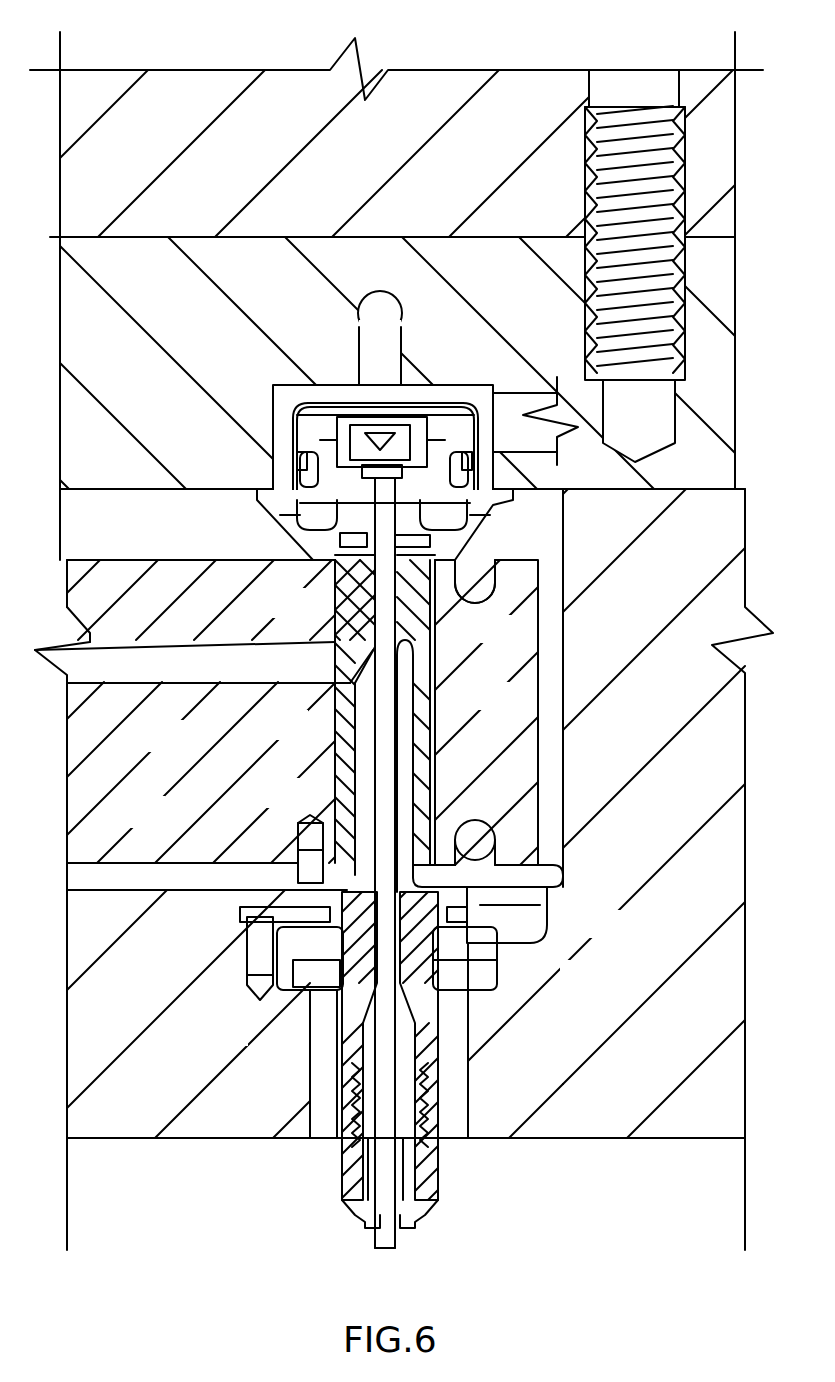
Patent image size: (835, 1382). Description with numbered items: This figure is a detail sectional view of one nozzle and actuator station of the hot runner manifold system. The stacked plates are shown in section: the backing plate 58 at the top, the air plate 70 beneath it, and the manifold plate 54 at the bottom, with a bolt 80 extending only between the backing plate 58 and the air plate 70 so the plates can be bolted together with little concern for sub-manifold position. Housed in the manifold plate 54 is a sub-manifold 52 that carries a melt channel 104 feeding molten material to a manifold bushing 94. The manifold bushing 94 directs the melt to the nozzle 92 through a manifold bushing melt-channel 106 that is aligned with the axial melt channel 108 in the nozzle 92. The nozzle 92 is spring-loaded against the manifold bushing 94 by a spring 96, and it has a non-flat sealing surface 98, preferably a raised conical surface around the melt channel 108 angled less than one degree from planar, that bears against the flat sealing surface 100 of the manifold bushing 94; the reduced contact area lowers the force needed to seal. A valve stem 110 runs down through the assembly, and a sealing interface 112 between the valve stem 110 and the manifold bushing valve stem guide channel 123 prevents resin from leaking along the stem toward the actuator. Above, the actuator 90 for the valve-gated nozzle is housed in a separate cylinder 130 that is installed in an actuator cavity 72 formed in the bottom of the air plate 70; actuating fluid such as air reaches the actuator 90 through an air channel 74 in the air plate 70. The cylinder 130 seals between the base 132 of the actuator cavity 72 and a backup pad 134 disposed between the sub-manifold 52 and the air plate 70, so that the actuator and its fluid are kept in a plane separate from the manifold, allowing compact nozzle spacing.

The backing plate 58 is at (447, 69).
The bolt 80 is at (590, 83).
The air plate 70 is at (188, 307).
The air channel 74 is at (535, 393).
The actuator 90 is at (447, 430).
The base of actuator cavity 132 is at (277, 398).
The cylinder 130 is at (287, 418).
The actuator cavity 72 is at (275, 463).
The backup pad 134 is at (273, 515).
The valve stem 110 is at (342, 598).
The manifold bushing valve stem guide channel 123 is at (440, 642).
The sealing interface 112 is at (390, 607).
The melt channel 104 is at (240, 668).
The manifold bushing 94 is at (333, 722).
The manifold bushing melt-channel 106 is at (408, 770).
The sub-manifold 52 is at (158, 825).
The non-flat sealing surface 98 is at (340, 817).
The flat sealing surface 100 is at (490, 912).
The spring 96 is at (523, 945).
The manifold plate 54 is at (156, 995).
The melt channel 108 is at (317, 995).
The nozzle 92 is at (440, 1045).